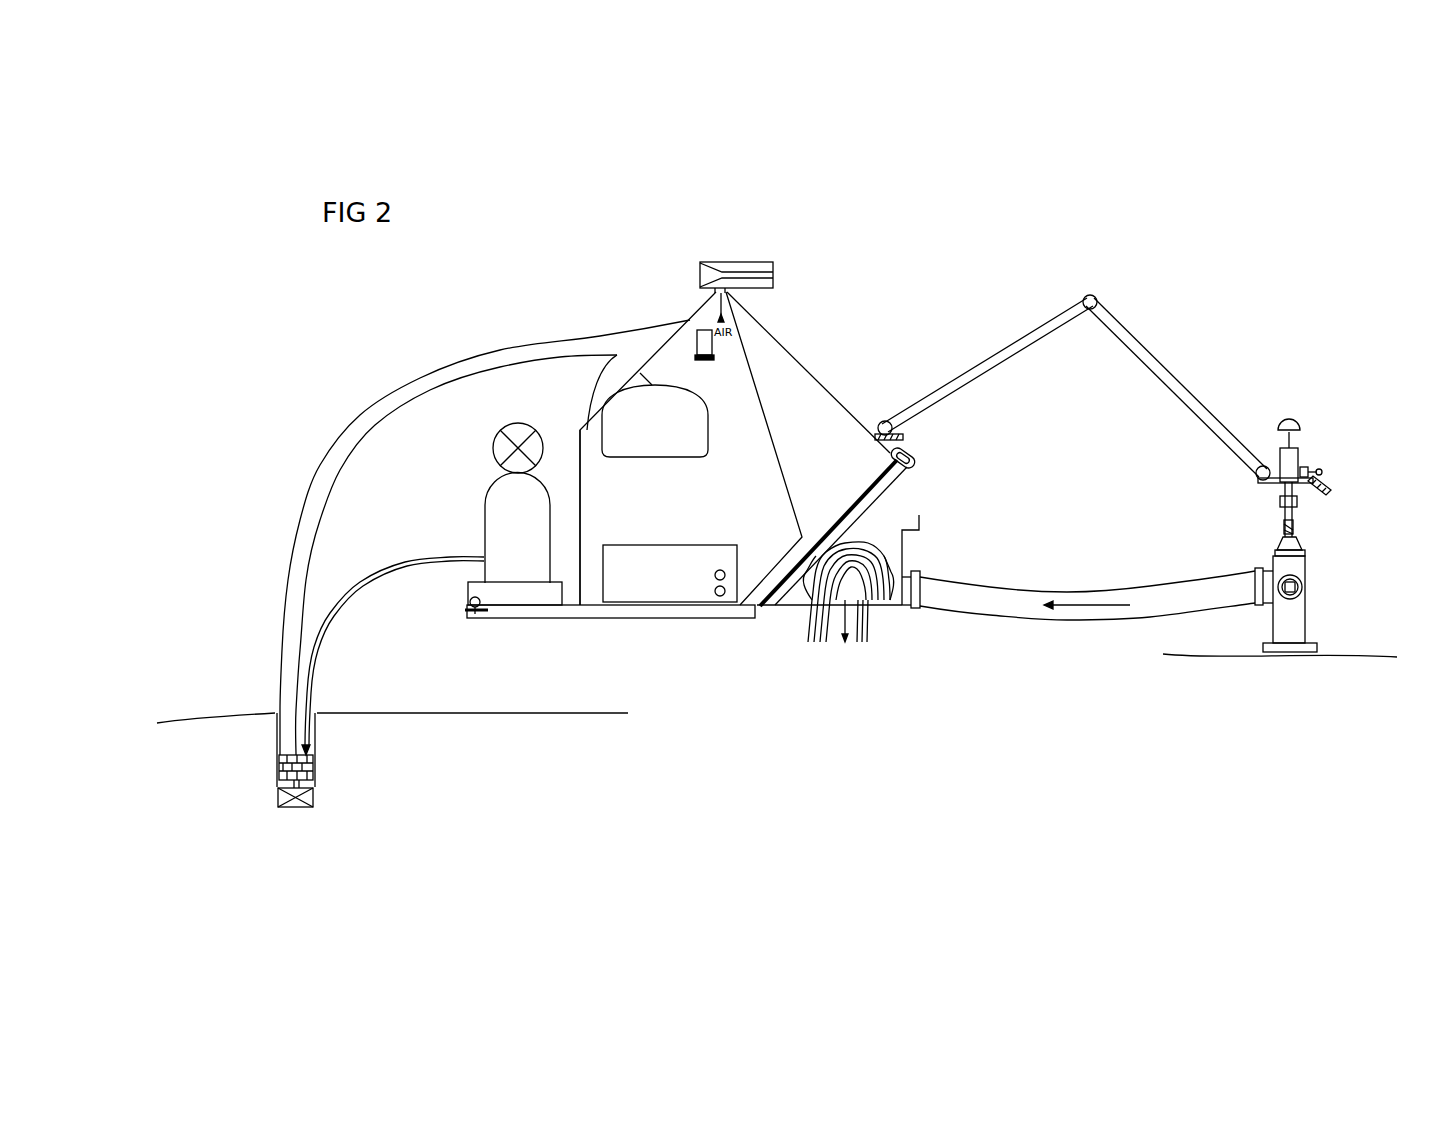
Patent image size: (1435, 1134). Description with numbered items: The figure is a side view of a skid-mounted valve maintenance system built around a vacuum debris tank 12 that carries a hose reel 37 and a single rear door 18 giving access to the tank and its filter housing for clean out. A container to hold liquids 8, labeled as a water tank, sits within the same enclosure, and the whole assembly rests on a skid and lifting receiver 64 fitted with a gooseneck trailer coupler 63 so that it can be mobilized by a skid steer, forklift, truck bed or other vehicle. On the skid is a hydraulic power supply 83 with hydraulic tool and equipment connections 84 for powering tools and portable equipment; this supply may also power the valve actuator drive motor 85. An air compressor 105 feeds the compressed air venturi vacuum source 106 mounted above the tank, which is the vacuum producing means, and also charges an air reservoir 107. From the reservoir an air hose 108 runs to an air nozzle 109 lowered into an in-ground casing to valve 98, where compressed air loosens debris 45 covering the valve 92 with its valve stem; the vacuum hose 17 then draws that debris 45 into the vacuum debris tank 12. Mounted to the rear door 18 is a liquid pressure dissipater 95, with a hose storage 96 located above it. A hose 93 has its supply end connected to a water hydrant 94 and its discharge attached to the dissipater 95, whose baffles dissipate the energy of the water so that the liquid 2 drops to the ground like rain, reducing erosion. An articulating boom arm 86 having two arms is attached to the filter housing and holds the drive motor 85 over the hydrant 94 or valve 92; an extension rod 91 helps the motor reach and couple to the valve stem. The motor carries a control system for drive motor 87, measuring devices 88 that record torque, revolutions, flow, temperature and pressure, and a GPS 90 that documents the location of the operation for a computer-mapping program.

The vacuum hose 17 is at (314, 470).
The air compressor 105 is at (503, 422).
The air reservoir 107 is at (485, 485).
The air hose 108 is at (395, 558).
The compressed air venturi vacuum source 106 is at (747, 262).
The vacuum debris tank 12 is at (741, 448).
The container to hold liquids 8 is at (634, 517).
The hose reel 37 is at (655, 421).
The single rear door 18 is at (848, 530).
The hydraulic power supply 83 is at (670, 573).
The hydraulic tool and equipment connection 84 is at (716, 597).
The skid and lifting receiver 64 is at (680, 610).
The gooseneck trailer coupler 63 is at (480, 620).
The liquid pressure dissipater 95 is at (880, 593).
The liquid 2 is at (837, 643).
The hose storage 96 is at (890, 517).
The articulating boom arm 86 is at (1140, 358).
The extension rod 91 is at (1283, 515).
The valve actuator drive motor 85 is at (1278, 457).
The GPS 90 is at (1297, 418).
The control system for drive motor 87 is at (1310, 472).
The measuring devices 88 is at (1375, 500).
The hose 93 is at (1140, 583).
The water hydrant 94 is at (1307, 567).
The in-ground casing to valve 98 is at (273, 730).
The air nozzle 109 is at (313, 742).
The debris 45 is at (317, 770).
The valve 92 is at (295, 807).